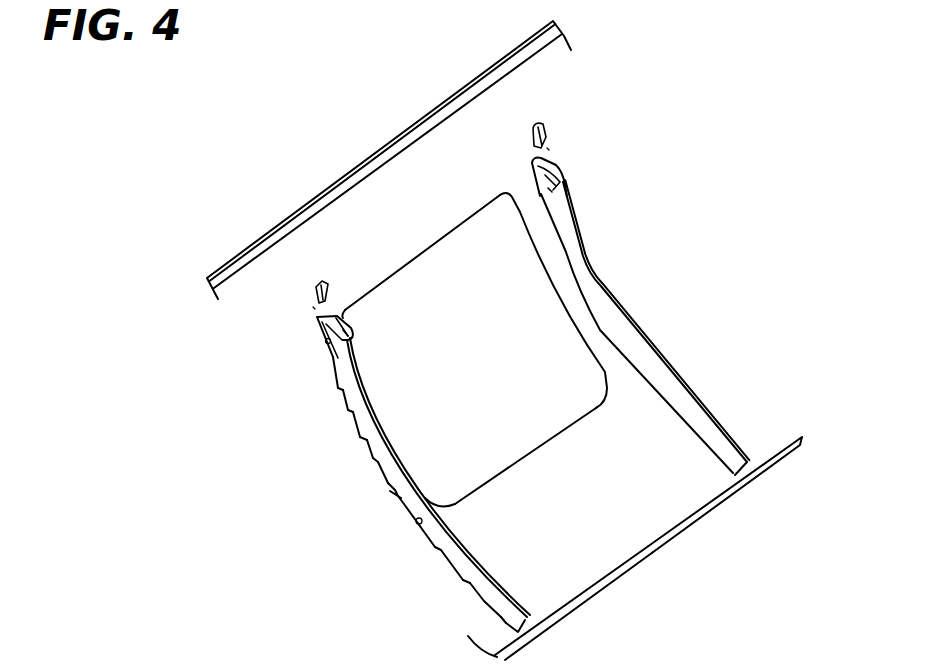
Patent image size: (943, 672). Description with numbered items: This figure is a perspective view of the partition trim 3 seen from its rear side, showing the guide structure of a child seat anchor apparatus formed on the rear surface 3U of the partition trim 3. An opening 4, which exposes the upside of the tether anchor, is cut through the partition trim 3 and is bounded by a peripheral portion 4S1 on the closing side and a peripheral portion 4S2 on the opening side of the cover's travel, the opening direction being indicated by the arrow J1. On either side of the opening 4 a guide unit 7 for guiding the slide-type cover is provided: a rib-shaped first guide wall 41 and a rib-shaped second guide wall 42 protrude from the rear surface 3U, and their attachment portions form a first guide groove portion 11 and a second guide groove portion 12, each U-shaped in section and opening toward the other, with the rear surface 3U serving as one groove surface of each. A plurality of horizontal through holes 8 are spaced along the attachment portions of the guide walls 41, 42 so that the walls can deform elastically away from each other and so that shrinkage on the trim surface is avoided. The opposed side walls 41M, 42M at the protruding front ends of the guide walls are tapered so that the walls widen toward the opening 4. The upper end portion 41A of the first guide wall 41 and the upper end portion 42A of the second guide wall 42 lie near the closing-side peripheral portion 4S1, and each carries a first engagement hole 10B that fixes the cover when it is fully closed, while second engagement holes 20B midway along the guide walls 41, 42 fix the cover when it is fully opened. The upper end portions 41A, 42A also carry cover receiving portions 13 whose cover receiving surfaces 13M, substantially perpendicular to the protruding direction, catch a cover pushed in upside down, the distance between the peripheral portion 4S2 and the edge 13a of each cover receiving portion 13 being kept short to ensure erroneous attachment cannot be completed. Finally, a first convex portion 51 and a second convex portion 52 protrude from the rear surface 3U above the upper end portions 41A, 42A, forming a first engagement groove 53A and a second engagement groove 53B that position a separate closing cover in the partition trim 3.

The partition trim 3 is at (447, 92).
The rear surface of the partition trim 3U is at (420, 167).
The opening 4 is at (550, 345).
The peripheral portion on the closing side of the opening 4S1 is at (420, 258).
The peripheral portion on the opening side of the opening 4S2 is at (520, 458).
The guide unit 7 is at (648, 552).
The horizontal through holes 8 is at (335, 386).
The first engagement holes 10B is at (324, 345).
The first guide groove portion 11 is at (536, 630).
The second guide groove portion 12 is at (740, 483).
The cover receiving portions 13 is at (319, 345).
The cover receiving surfaces 13M is at (332, 351).
The edge on the cover opening side of the cover receiving portion 13a is at (346, 334).
The second engagement holes 20B is at (416, 524).
The first guide wall 41 is at (398, 497).
The upper end portion of the first guide wall 41A is at (317, 332).
The opposed side wall of the first guide wall 41M is at (469, 551).
The second guide wall 42 is at (701, 411).
The upper end portion of the second guide wall 42A is at (543, 160).
The opposed side wall of the second guide wall 42M is at (658, 394).
The first convex portion 51 is at (317, 290).
The second convex portion 52 is at (539, 122).
The first engagement groove 53A is at (313, 307).
The second engagement groove 53B is at (548, 148).
The opening direction J1 is at (721, 307).